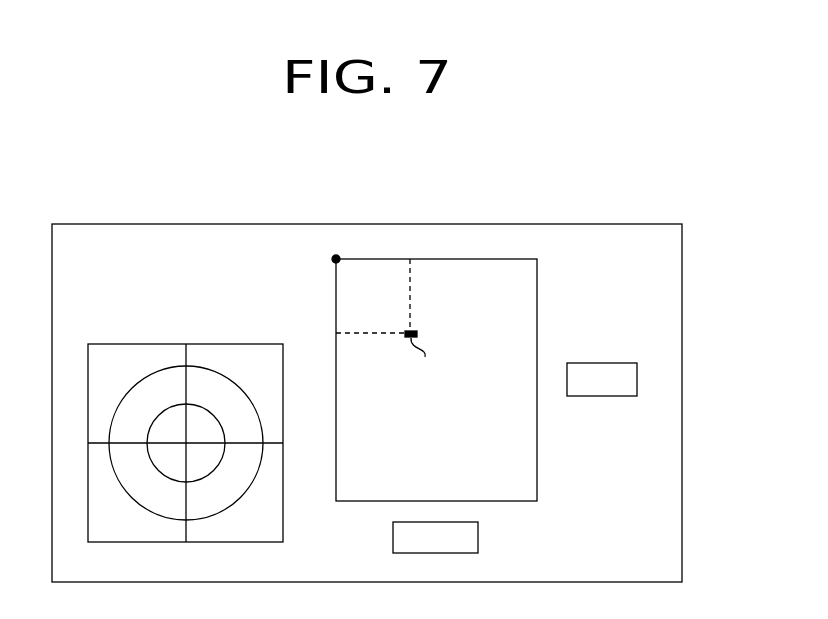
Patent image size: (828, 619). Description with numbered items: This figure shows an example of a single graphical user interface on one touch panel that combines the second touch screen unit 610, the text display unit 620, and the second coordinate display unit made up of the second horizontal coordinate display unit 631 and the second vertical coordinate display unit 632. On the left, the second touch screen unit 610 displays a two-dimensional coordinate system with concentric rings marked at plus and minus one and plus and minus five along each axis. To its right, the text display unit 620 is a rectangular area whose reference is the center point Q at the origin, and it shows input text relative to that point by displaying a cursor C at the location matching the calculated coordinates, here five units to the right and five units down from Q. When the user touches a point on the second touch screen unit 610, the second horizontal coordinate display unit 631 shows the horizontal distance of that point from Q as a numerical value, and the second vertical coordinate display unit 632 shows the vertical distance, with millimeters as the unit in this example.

The second touch screen unit 610 is at (238, 543).
The text display unit 620 is at (510, 259).
The second horizontal coordinate display unit 631 is at (467, 554).
The second vertical coordinate display unit 632 is at (637, 363).